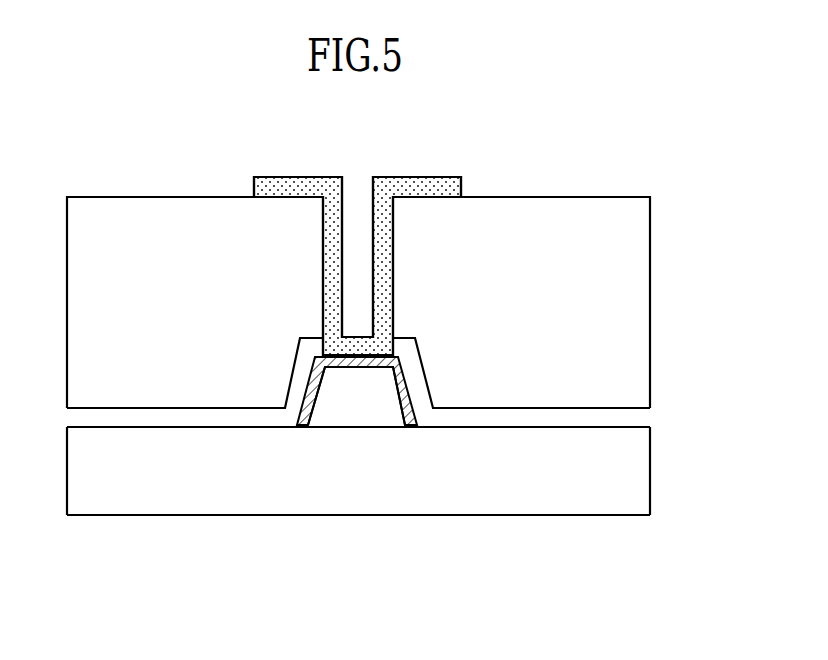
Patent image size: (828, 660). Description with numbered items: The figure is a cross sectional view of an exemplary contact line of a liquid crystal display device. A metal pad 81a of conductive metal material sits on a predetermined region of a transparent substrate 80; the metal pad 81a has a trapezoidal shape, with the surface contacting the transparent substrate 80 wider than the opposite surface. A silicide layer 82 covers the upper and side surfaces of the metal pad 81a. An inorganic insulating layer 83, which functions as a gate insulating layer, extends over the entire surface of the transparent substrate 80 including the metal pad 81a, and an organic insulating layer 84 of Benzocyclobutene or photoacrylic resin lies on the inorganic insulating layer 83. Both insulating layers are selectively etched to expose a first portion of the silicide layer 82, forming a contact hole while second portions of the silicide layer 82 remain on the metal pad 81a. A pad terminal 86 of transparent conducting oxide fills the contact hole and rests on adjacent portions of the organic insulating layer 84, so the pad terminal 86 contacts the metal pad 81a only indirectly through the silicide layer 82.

The transparent substrate 80 is at (625, 483).
The metal pad 81a is at (362, 410).
The silicide layer 82 is at (398, 357).
The inorganic insulating layer 83 is at (625, 418).
The organic insulating layer 84 is at (625, 310).
The pad terminal 86 is at (387, 235).